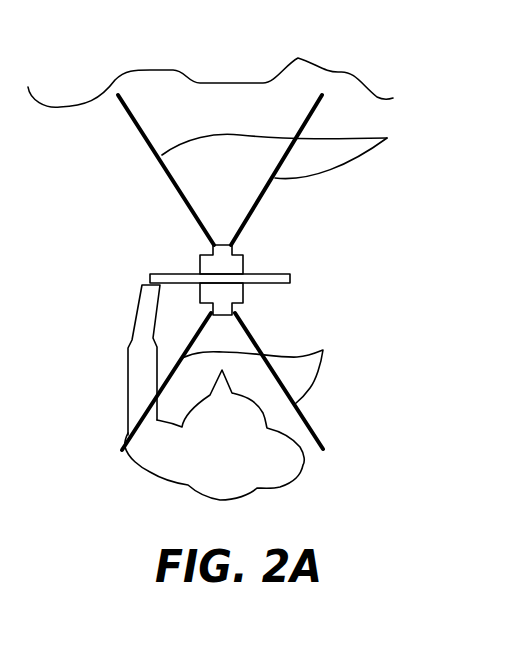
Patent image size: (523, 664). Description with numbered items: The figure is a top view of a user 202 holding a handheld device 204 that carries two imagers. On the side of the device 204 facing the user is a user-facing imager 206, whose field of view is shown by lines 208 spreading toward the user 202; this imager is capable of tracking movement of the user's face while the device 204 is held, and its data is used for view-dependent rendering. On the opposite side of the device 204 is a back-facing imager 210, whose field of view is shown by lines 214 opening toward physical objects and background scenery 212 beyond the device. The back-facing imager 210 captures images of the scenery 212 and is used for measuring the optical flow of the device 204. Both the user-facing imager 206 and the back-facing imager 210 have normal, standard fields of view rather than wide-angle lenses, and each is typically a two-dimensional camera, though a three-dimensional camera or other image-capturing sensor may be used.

The user 202 is at (303, 465).
The device 204 is at (290, 278).
The user-facing imager 206 is at (243, 295).
The lines (field of view of user-facing imager) 208 is at (323, 350).
The back-facing imager 210 is at (243, 261).
The background scenery 212 is at (298, 58).
The lines (field of view of back-facing imager) 214 is at (274, 170).